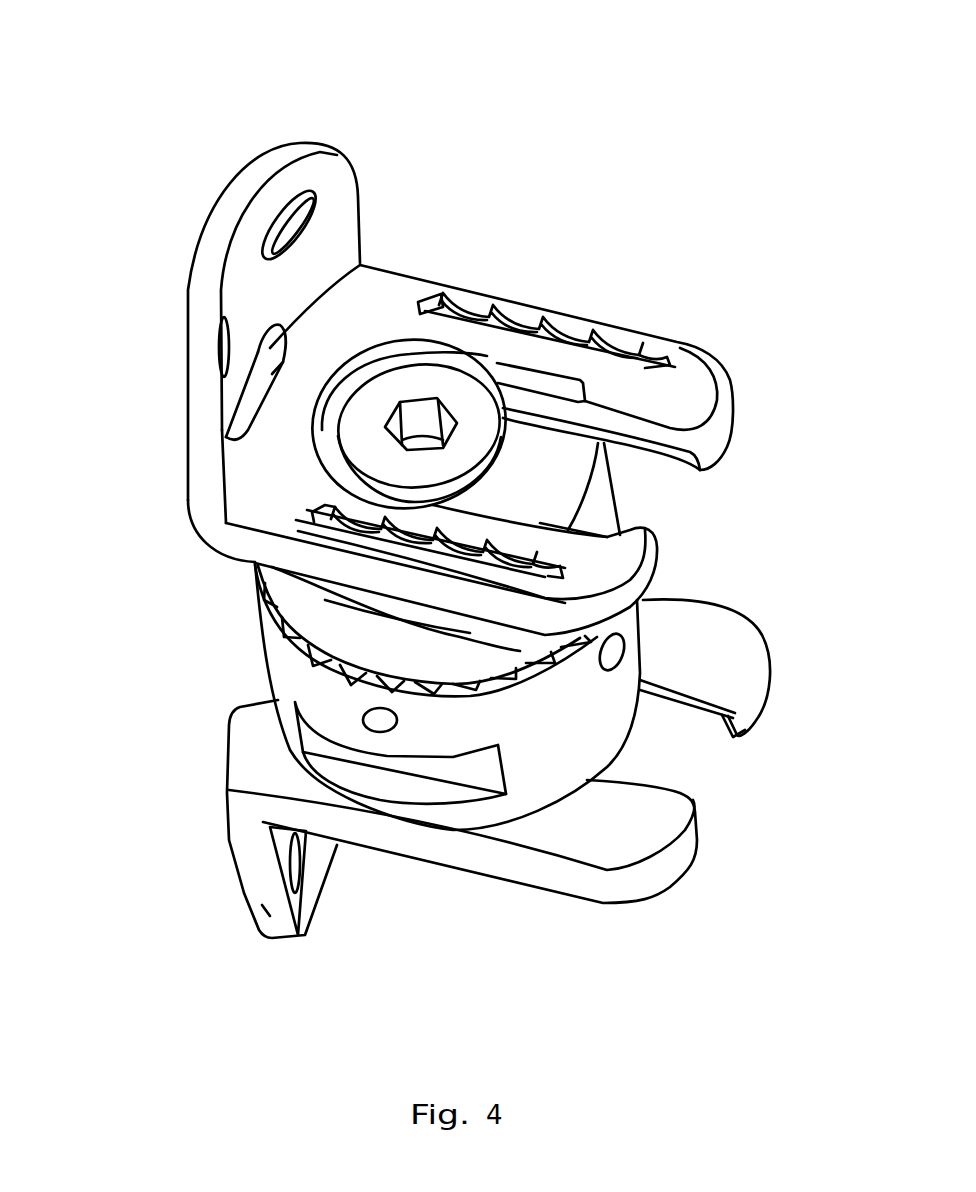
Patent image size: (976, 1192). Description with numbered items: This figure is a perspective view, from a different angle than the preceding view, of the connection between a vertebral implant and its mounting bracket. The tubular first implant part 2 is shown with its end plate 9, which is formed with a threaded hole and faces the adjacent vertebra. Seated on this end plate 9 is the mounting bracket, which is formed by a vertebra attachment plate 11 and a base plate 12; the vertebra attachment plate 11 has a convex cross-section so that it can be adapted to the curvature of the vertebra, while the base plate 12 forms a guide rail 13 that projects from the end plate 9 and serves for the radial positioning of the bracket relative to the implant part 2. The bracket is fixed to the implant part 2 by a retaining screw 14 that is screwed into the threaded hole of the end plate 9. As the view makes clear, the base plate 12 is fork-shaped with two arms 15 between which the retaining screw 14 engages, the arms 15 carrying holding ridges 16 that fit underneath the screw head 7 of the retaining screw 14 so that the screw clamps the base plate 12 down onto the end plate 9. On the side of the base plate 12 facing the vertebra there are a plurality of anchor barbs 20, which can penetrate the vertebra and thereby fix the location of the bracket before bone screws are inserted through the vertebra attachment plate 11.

The first implant part 2 is at (580, 707).
The screw head 7 is at (363, 433).
The end plate 9 is at (545, 457).
The vertebra attachment plate 11 is at (333, 220).
The base plate 12 is at (363, 307).
The guide rail 13 is at (680, 405).
The retaining screw 14 is at (482, 402).
The arms 15 is at (617, 560).
The holding ridges 16 is at (601, 412).
The anchor barbs 20 is at (492, 303).